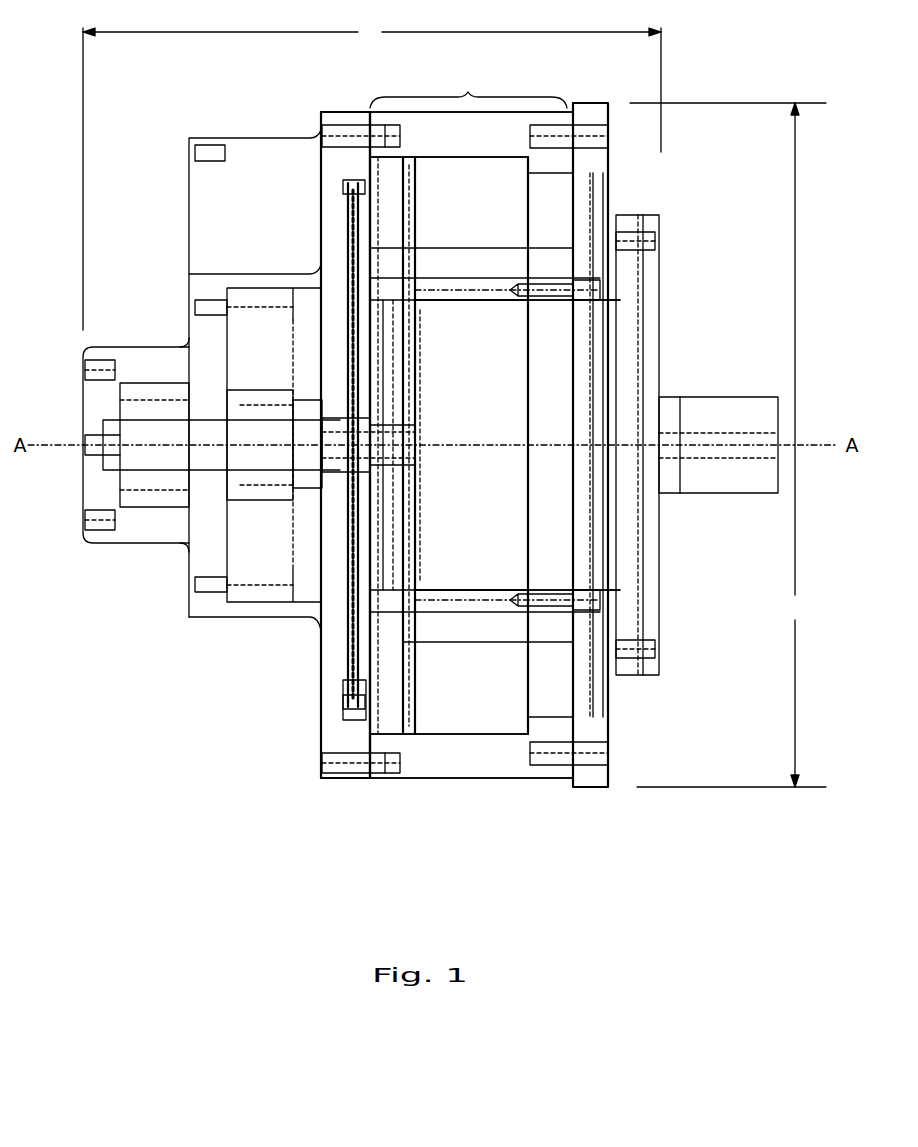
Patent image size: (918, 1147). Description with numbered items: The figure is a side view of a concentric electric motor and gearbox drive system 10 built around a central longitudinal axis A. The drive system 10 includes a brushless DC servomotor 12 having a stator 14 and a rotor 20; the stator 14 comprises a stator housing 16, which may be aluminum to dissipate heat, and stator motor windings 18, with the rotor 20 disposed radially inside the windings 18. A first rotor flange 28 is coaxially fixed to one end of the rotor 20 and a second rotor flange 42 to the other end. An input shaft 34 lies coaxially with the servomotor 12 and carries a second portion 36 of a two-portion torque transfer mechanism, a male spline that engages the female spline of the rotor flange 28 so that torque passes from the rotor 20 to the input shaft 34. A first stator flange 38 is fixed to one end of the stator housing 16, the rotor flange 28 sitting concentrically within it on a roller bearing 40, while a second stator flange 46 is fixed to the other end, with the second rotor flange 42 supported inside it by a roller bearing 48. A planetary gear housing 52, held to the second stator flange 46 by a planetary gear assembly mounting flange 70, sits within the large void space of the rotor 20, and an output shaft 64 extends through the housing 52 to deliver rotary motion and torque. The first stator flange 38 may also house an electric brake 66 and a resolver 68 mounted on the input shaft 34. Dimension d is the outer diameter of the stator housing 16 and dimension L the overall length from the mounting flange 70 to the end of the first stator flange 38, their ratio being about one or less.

The drive system 10 is at (686, 82).
The brushless DC servomotor 12 is at (470, 420).
The stator 14 is at (447, 760).
The stator housing 16 is at (484, 778).
The stator motor windings 18 is at (435, 706).
The rotor 20 is at (475, 593).
The first rotor flange 28 is at (355, 705).
The input shaft 34 is at (138, 450).
The second portion of the two-portion torque transfer mechanism 36 is at (340, 440).
The first stator flange 38 is at (345, 785).
The roller bearing 40 is at (358, 185).
The second rotor flange 42 is at (543, 288).
The second stator flange 46 is at (597, 727).
The roller bearing 48 is at (582, 283).
The planetary gear housing 52 is at (447, 300).
The output shaft 64 is at (710, 397).
The electric brake 66 is at (240, 563).
The resolver 68 is at (153, 490).
The planetary gear assembly mounting flange 70 is at (650, 280).